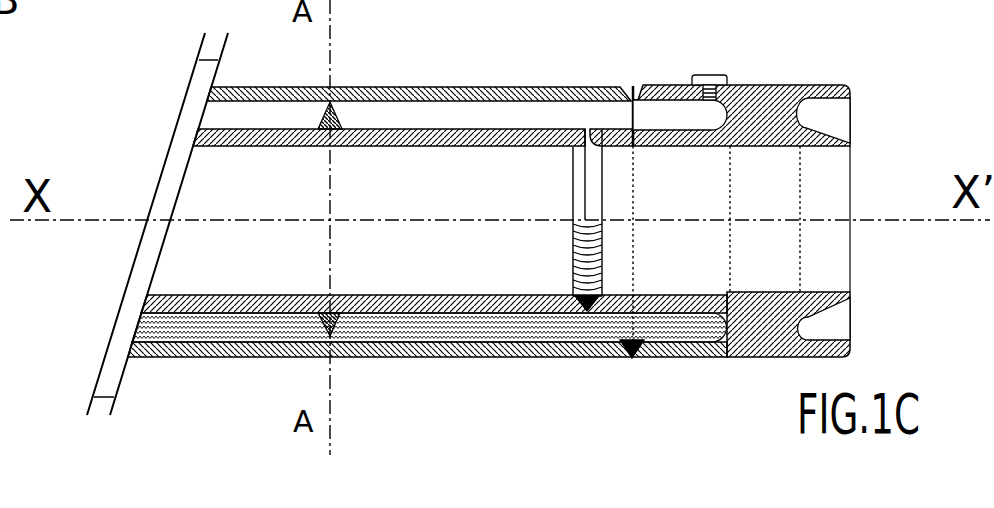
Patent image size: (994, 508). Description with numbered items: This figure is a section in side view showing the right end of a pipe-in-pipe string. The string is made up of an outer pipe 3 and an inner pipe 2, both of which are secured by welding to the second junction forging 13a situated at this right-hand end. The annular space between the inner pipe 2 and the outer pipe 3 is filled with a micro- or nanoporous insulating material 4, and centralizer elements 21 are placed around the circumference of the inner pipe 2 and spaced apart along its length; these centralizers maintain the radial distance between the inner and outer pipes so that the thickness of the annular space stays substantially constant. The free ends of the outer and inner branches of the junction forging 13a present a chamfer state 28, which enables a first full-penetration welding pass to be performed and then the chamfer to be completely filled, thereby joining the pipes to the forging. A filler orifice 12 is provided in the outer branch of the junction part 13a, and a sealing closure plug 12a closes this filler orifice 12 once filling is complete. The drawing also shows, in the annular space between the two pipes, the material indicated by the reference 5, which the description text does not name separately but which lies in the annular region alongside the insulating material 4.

The inner pipe 2 is at (425, 147).
The outer pipe 3 is at (426, 358).
The micro- or nanoporous insulating material 4 is at (503, 117).
The damping filler material 5 is at (500, 345).
The filler orifice 12 is at (707, 100).
The sealing closure plug 12a is at (711, 75).
The second junction forging 13a is at (776, 96).
The centralizer elements 21 is at (338, 107).
The chamfer state 28 is at (592, 155).